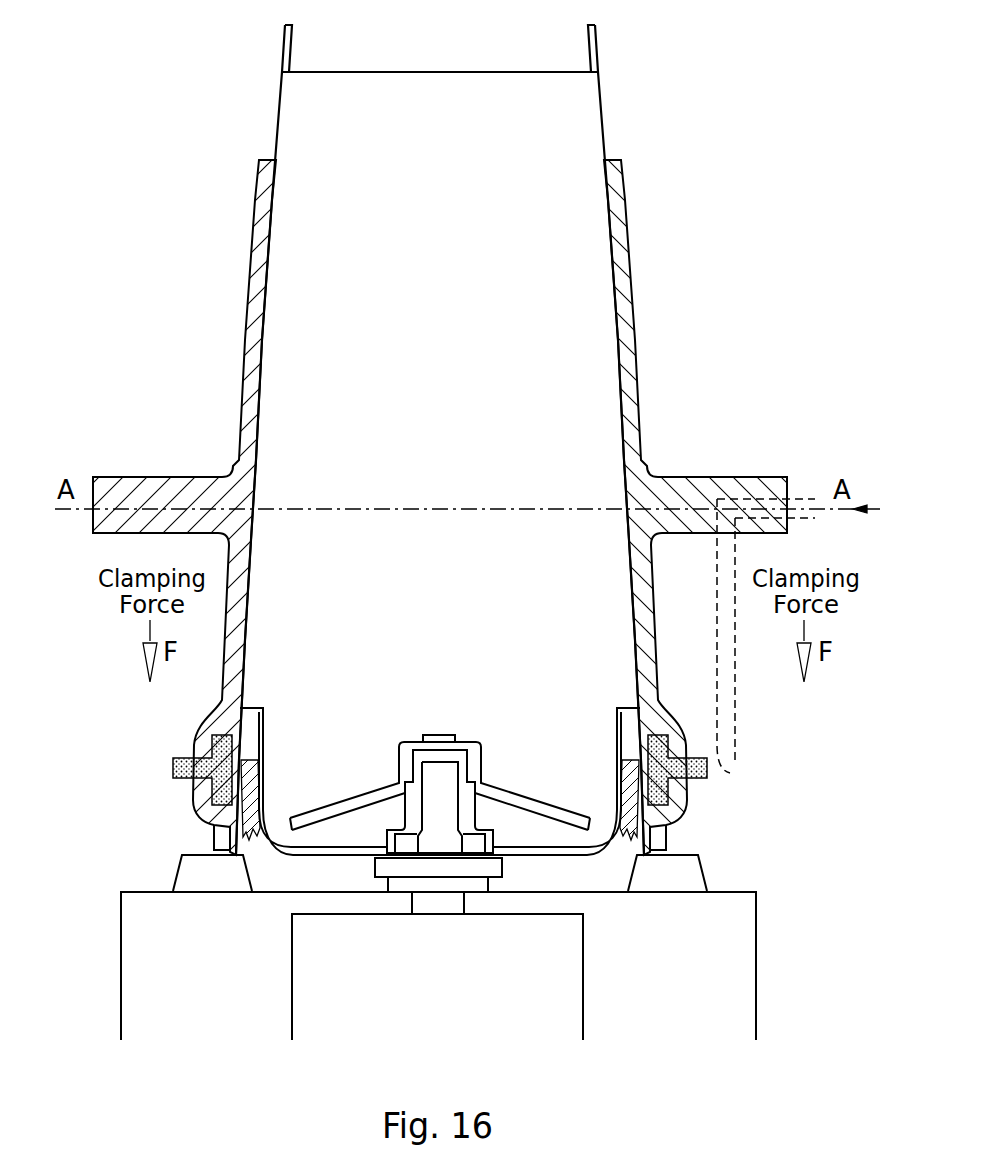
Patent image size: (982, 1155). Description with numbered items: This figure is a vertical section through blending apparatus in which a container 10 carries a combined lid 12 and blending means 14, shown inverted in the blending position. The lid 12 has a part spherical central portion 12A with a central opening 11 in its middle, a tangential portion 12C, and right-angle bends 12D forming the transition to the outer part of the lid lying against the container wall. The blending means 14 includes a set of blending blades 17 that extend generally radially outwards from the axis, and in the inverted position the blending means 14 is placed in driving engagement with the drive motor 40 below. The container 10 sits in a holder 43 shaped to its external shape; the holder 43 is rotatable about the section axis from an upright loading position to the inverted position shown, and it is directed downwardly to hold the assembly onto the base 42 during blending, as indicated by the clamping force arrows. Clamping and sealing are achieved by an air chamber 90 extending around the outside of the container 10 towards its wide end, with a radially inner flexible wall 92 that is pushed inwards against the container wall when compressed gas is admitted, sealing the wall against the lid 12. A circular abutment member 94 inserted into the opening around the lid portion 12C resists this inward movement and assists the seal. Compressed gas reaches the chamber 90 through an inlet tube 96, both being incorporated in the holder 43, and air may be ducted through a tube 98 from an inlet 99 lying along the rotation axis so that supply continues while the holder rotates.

The container 10 is at (276, 124).
The holder 43 is at (243, 410).
The blending means 14 is at (367, 741).
The lid 12 is at (444, 800).
The part spherical central portion 12A is at (560, 825).
The tangential portion 12C is at (610, 777).
The right-angle bends 12D is at (615, 708).
The blending blades 17 is at (523, 795).
The central opening 11 is at (470, 810).
The drive motor 40 is at (546, 993).
The base 42 is at (192, 877).
The air chamber 90 is at (157, 756).
The inlet tube 96 is at (198, 735).
The flexible wall 92 is at (653, 787).
The abutment member 94 is at (660, 830).
The tube 98 is at (785, 636).
The inlet 99 is at (800, 518).